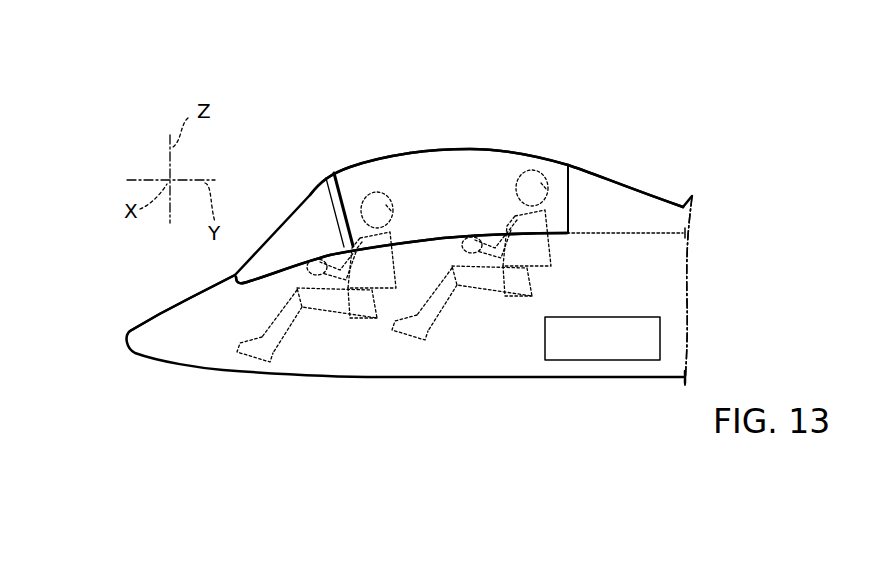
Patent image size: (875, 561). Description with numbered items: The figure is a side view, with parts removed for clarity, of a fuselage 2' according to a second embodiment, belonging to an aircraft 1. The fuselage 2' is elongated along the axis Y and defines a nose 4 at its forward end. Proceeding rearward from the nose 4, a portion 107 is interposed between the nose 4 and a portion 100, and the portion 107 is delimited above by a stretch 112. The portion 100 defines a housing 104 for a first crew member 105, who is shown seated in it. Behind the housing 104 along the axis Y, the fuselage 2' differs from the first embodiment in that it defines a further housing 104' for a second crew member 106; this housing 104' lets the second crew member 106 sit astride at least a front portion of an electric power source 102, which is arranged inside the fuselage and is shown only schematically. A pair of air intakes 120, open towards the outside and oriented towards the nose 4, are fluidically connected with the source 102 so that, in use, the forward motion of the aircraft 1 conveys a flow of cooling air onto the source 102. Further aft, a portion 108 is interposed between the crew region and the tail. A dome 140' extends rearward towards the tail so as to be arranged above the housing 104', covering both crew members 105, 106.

The aircraft 1 is at (640, 399).
The fuselage 2' is at (727, 251).
The nose 4 is at (123, 342).
The portion 100 is at (327, 324).
The electric power source 102 is at (597, 349).
The housing 104 is at (360, 142).
The housing 104' is at (604, 169).
The first crew member 105 is at (393, 229).
The second crew member 106 is at (508, 240).
The portion 107 is at (250, 118).
The portion 108 is at (653, 160).
The stretch 112 is at (190, 298).
The air intakes 120 is at (470, 314).
The dome 140' is at (315, 182).